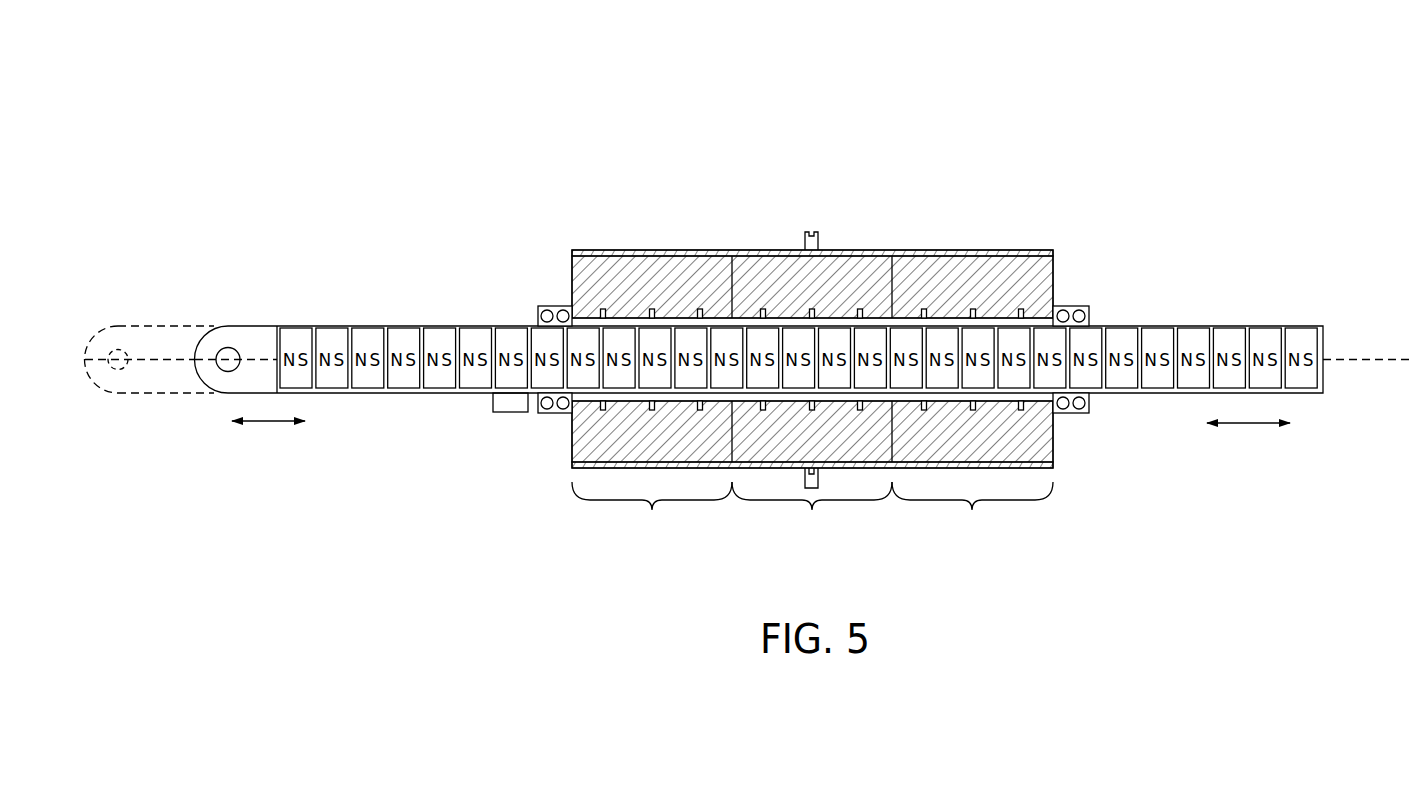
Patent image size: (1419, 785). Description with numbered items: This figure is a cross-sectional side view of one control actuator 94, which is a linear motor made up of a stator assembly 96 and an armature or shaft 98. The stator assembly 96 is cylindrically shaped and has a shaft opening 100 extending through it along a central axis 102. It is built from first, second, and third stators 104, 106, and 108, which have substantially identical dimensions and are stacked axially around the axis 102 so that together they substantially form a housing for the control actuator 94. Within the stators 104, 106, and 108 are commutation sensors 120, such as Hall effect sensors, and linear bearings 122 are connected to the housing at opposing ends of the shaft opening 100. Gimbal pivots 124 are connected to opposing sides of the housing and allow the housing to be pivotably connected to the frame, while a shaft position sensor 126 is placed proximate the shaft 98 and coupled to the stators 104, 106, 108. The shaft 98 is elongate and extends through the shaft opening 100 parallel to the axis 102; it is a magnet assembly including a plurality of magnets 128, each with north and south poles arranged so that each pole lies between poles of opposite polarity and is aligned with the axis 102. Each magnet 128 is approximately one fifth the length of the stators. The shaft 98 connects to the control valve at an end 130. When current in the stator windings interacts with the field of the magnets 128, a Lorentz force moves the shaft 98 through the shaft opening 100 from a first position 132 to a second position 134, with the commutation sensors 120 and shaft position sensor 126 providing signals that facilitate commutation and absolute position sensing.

The control actuator 94 is at (629, 87).
The stator assembly 96 is at (835, 308).
The armature (or shaft) 98 is at (759, 319).
The shaft opening 100 is at (584, 400).
The central axis 102 is at (1377, 358).
The first stator 104 is at (652, 399).
The second stator 106 is at (812, 399).
The third stator 108 is at (972, 512).
The commutation sensors 120 is at (603, 309).
The linear bearings 122 is at (553, 305).
The gimbal pivots 124 is at (812, 230).
The shaft position sensor 126 is at (493, 404).
The magnets 128 is at (335, 330).
The end 130 is at (212, 333).
The first position 132 is at (197, 452).
The second position 134 is at (147, 414).